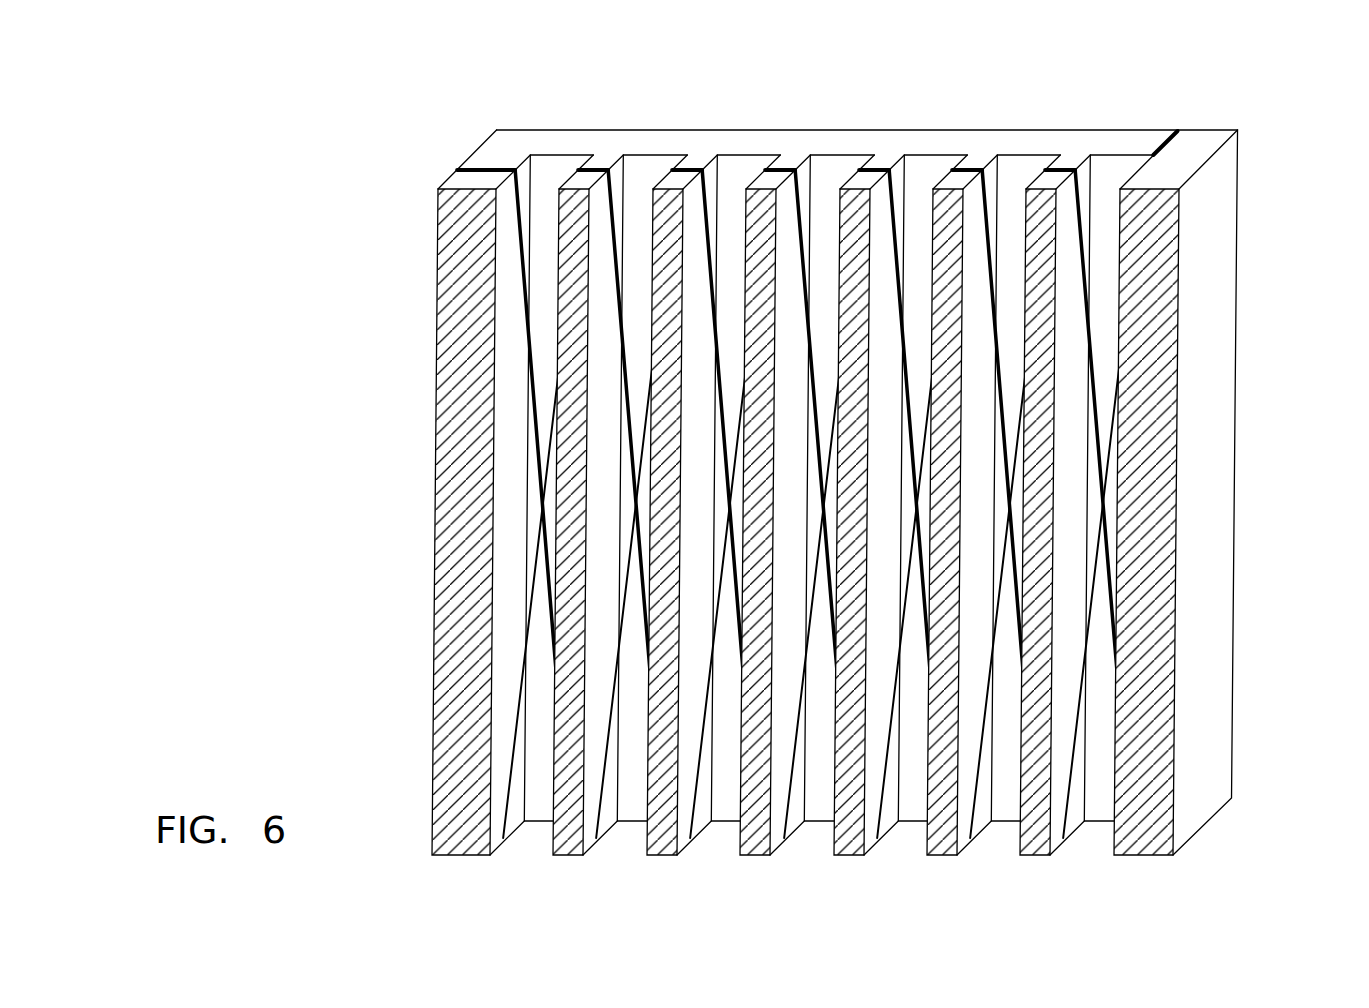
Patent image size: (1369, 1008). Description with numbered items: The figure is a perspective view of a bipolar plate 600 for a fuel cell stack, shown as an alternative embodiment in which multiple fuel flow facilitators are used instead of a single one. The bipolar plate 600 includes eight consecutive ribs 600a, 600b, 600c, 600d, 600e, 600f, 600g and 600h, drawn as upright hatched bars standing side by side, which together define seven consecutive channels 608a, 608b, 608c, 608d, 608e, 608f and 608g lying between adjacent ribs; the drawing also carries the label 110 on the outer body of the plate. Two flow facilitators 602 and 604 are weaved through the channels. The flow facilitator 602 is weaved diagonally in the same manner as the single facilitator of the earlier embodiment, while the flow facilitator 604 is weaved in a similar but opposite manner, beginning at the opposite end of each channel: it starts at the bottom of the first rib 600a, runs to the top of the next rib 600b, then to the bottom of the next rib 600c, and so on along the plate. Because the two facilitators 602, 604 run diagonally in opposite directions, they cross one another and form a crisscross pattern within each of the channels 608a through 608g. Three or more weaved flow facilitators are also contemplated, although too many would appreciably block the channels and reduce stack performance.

The bipolar plate 600 is at (785, 493).
The housing frame 110 is at (1223, 205).
The flow facilitator 602 is at (456, 172).
The flow facilitator 604 is at (641, 610).
The channel 608a is at (557, 168).
The channel 608b is at (650, 168).
The channel 608c is at (743, 168).
The channel 608d is at (836, 168).
The channel 608e is at (929, 168).
The channel 608f is at (1021, 168).
The channel 608g is at (1115, 168).
The rib 600a is at (475, 842).
The rib 600b is at (568, 842).
The rib 600c is at (662, 842).
The rib 600d is at (755, 842).
The rib 600e is at (849, 842).
The rib 600f is at (942, 842).
The rib 600g is at (1035, 842).
The rib 600h is at (1155, 842).